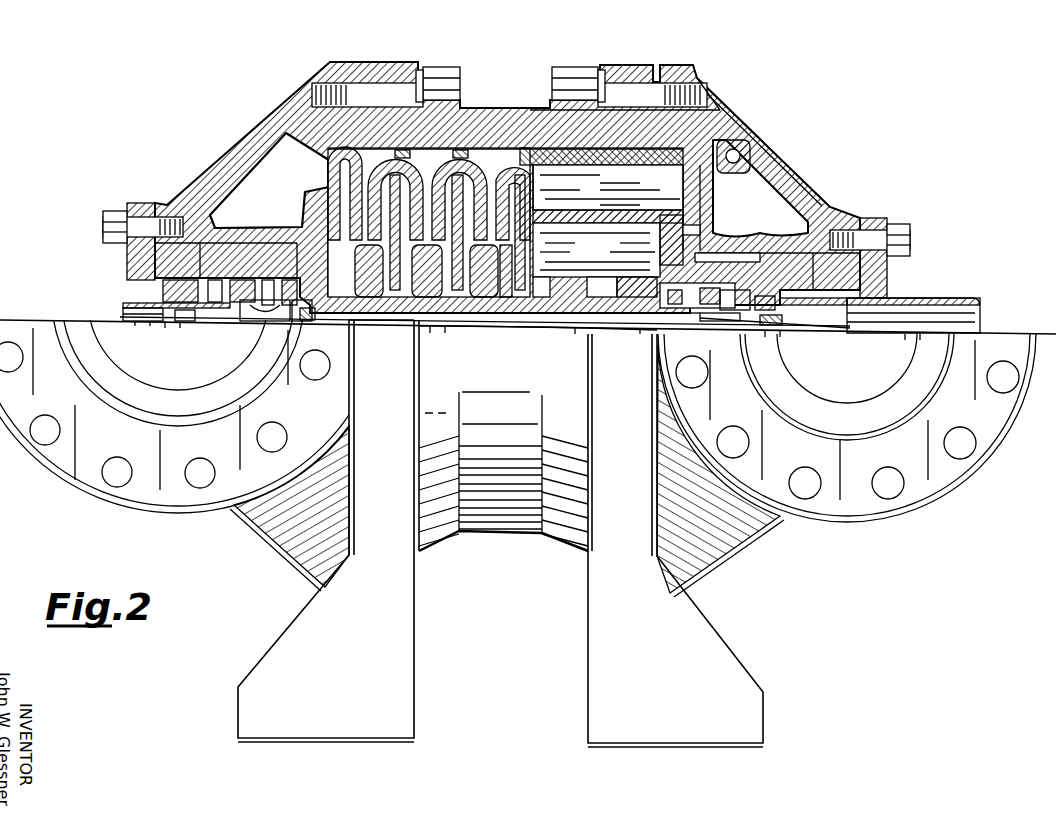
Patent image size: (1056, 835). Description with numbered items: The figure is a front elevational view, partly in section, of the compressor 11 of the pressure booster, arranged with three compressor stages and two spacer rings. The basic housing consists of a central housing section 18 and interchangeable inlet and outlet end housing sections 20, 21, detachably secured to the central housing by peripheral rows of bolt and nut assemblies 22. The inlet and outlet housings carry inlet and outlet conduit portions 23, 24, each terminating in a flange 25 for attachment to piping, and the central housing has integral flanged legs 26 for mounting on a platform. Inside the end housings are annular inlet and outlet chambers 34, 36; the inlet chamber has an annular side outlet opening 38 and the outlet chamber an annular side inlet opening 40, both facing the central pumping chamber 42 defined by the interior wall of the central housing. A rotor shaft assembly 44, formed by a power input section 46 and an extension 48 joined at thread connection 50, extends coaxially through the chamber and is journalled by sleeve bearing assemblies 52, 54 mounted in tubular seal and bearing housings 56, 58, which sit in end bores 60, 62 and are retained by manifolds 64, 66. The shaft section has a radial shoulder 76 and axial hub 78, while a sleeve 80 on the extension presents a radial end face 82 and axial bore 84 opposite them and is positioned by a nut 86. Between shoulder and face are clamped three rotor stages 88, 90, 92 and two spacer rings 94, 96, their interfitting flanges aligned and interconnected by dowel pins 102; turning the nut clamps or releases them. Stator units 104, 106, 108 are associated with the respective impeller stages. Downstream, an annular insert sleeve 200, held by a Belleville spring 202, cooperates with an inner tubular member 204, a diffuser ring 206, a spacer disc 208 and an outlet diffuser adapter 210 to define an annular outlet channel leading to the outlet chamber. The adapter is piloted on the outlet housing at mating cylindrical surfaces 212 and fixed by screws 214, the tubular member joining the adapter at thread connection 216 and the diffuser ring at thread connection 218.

The compressor 11 is at (257, 537).
The central housing section 18 is at (497, 128).
The inlet end housing section 20 is at (233, 160).
The outlet end housing section 21 is at (760, 150).
The bolt and nut assemblies 22 is at (436, 68).
The inlet conduit portion 23 is at (169, 390).
The outlet conduit portion 24 is at (823, 402).
The flange 25 is at (100, 493).
The flanged legs 26 is at (500, 533).
The annular inlet chamber 34 is at (277, 199).
The annular outlet chamber 36 is at (745, 222).
The annular side outlet opening 38 is at (330, 164).
The annular side inlet opening 40 is at (698, 207).
The central pumping chamber 42 is at (503, 157).
The rotor shaft assembly 44 is at (478, 320).
The power input section 46 is at (263, 312).
The shaft extension 48 is at (676, 315).
The thread connection 50 is at (330, 327).
The sleeve bearing assembly 52 is at (254, 270).
The sleeve bearing assembly 54 is at (736, 280).
The tubular seal and bearing housing 56 is at (193, 269).
The tubular seal and bearing housing 58 is at (843, 281).
The end bore 60 is at (235, 243).
The end bore 62 is at (777, 262).
The manifold 64 is at (127, 266).
The manifold 66 is at (887, 278).
The shoulder 76 is at (361, 271).
The hub 78 is at (398, 280).
The sleeve 80 is at (752, 318).
The radial end face 82 is at (637, 296).
The axial bore 84 is at (700, 315).
The nut 86 is at (887, 321).
The rotor stage 88 is at (381, 334).
The rotor stage 90 is at (447, 326).
The rotor stage 92 is at (512, 322).
The spacer ring 94 is at (560, 322).
The spacer ring 96 is at (622, 338).
The dowel pins 102 is at (470, 280).
The inlet stator unit 104 is at (367, 155).
The stator unit 106 is at (432, 165).
The stator unit 108 is at (507, 172).
The annular insert sleeve 200 is at (610, 158).
The Belleville spring 202 is at (673, 152).
The inner tubular member 204 is at (596, 250).
The diffuser ring 206 is at (540, 184).
The spacer disc 208 is at (537, 251).
The outlet diffuser adapter 210 is at (677, 208).
The mating cylindrical surfaces 212 is at (733, 168).
The screws 214 is at (677, 228).
The thread connection 216 is at (655, 207).
The thread connection 218 is at (540, 201).